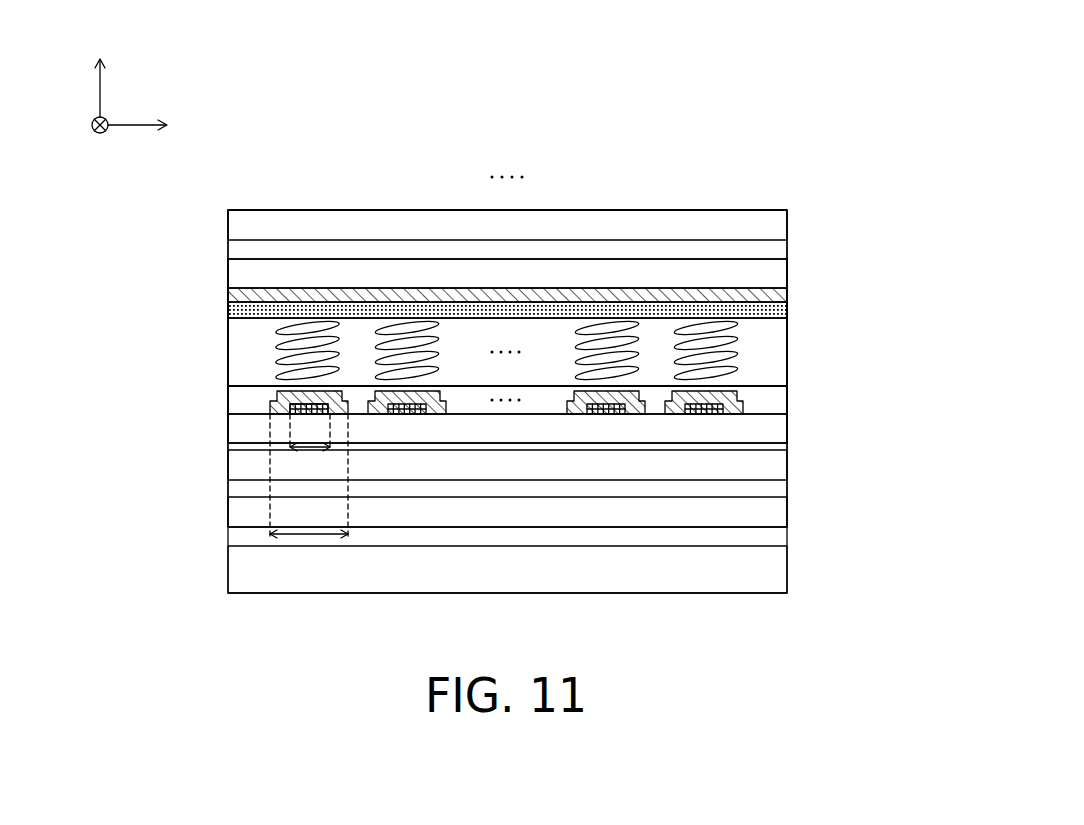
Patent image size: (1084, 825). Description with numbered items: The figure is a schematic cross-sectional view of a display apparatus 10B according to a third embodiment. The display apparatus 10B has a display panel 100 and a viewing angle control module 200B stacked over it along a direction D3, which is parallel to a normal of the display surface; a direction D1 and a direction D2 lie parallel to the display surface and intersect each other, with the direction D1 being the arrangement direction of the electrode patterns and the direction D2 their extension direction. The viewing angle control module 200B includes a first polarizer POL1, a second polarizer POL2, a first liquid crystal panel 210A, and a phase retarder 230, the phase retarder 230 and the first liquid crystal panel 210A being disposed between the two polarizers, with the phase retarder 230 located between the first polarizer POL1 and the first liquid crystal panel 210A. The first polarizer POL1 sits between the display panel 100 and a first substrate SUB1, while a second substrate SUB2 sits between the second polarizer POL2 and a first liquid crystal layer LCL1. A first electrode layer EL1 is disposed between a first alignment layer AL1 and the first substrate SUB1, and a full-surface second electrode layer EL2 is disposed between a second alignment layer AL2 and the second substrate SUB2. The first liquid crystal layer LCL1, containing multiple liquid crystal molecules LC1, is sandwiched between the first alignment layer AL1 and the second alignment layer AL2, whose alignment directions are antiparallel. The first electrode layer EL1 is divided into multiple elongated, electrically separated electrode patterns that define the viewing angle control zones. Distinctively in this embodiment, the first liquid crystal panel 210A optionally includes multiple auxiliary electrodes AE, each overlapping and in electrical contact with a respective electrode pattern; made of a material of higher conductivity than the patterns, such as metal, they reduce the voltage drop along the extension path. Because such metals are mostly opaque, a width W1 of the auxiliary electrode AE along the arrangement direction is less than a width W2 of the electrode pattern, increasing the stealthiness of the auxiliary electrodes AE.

The direction D1 is at (153, 126).
The direction D2 is at (85, 126).
The direction D3 is at (101, 73).
The first electrode layer EL1 is at (881, 20).
The second polarizer POL2 is at (765, 225).
The second substrate SUB2 is at (765, 272).
The second electrode layer EL2 is at (787, 295).
The second alignment layer AL2 is at (787, 310).
The first liquid crystal layer LCL1 is at (765, 340).
The liquid crystal molecules LC1 is at (275, 345).
The first alignment layer AL1 is at (758, 390).
The auxiliary electrode AE is at (297, 395).
The first substrate SUB1 is at (765, 427).
The phase retarder 230 is at (760, 466).
The first polarizer POL1 is at (760, 511).
The display panel 100 is at (760, 571).
The width W1 is at (308, 449).
The width W2 is at (308, 536).
The first liquid crystal panel 210A is at (159, 260).
The viewing angle control module 200B is at (103, 212).
The display apparatus 10B is at (940, 641).